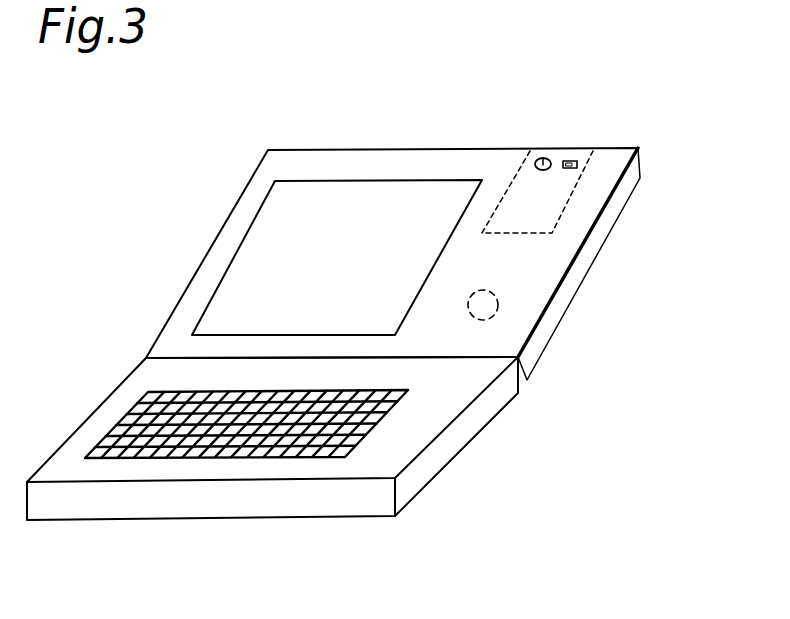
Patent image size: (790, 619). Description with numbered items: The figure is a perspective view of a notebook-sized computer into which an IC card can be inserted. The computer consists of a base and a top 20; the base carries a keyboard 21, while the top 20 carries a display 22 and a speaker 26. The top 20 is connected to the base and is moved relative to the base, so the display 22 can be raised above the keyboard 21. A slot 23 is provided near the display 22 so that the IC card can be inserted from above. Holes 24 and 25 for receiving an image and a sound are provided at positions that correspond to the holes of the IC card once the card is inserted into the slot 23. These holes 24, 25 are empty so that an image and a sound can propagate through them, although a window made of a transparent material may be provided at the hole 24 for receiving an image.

The top 20 is at (543, 330).
The keyboard 21 is at (237, 450).
The display 22 is at (312, 210).
The slot 23 is at (585, 145).
The hole for receiving an image 24 is at (546, 158).
The hole for receiving a sound 25 is at (565, 161).
The speaker 26 is at (497, 303).